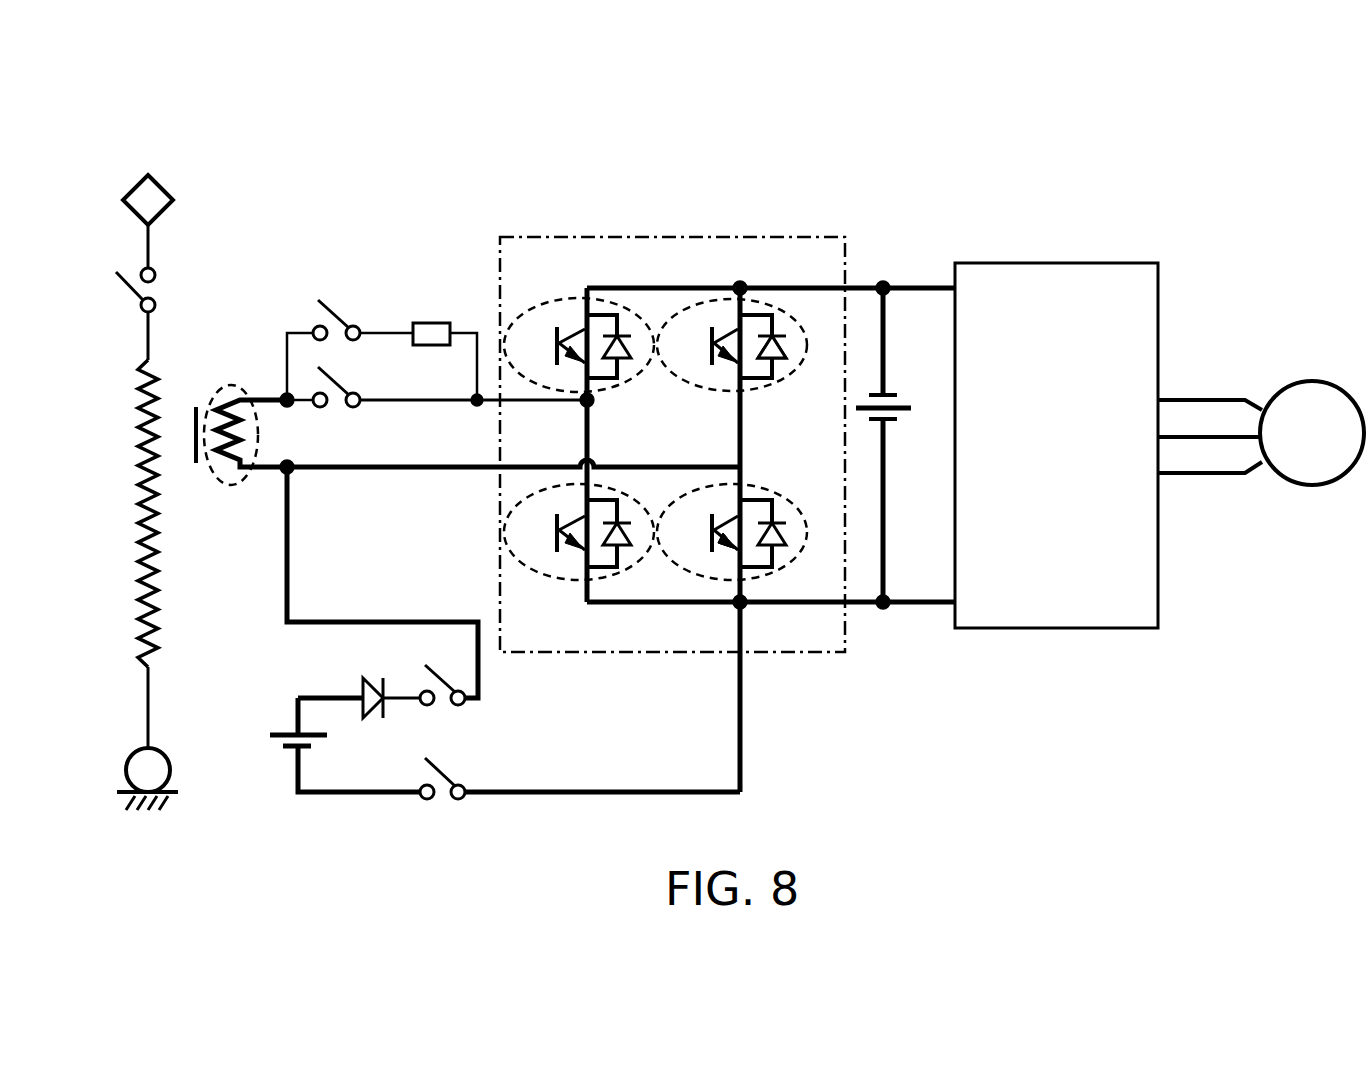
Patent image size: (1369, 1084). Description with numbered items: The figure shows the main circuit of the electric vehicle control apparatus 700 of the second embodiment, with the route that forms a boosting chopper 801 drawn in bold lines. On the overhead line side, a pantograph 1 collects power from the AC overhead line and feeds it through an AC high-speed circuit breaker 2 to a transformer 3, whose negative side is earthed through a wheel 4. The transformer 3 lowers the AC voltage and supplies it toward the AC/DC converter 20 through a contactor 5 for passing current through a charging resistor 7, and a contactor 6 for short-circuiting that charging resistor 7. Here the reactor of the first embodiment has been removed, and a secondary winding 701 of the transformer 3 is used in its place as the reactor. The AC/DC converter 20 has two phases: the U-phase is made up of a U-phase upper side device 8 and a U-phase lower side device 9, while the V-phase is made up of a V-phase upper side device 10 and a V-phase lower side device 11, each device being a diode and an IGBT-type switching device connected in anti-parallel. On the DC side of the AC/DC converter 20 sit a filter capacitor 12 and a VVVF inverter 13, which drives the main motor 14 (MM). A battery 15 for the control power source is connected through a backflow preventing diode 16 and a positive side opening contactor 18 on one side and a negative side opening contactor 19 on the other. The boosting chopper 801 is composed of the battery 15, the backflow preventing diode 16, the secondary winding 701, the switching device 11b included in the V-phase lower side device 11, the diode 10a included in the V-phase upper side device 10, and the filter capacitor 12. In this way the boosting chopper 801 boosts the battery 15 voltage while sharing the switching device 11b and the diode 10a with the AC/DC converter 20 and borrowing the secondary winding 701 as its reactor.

The pantograph 1 is at (162, 186).
The AC high-speed circuit breaker 2 is at (124, 293).
The transformer 3 is at (132, 497).
The wheel 4 is at (125, 770).
The contactor 5 is at (335, 305).
The contactor 6 is at (338, 408).
The charging resistor 7 is at (432, 323).
The U-phase upper side device 8 is at (628, 380).
The U-phase lower side device 9 is at (552, 580).
The V-phase upper side device 10 is at (755, 388).
The diode 10a is at (780, 364).
The V-phase lower side device 11 is at (782, 490).
The switching device 11b is at (728, 553).
The filter capacitor 12 is at (896, 390).
The VVVF inverter 13 is at (1106, 262).
The main motor 14 is at (1314, 382).
The battery 15 is at (290, 752).
The backflow preventing diode 16 is at (360, 692).
The positive side opening contactor 18 is at (440, 706).
The negative side opening contactor 19 is at (443, 800).
The AC/DC converter 20 is at (804, 236).
The electric vehicle control apparatus 700 is at (1183, 154).
The secondary winding 701 is at (233, 372).
The boosting chopper 801 is at (768, 779).